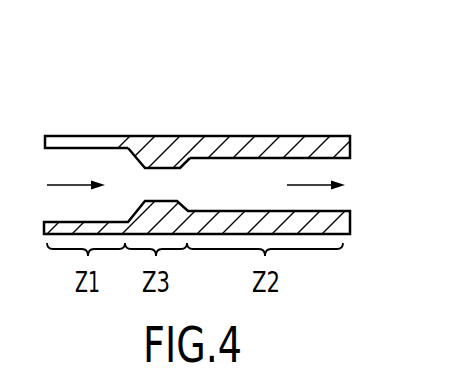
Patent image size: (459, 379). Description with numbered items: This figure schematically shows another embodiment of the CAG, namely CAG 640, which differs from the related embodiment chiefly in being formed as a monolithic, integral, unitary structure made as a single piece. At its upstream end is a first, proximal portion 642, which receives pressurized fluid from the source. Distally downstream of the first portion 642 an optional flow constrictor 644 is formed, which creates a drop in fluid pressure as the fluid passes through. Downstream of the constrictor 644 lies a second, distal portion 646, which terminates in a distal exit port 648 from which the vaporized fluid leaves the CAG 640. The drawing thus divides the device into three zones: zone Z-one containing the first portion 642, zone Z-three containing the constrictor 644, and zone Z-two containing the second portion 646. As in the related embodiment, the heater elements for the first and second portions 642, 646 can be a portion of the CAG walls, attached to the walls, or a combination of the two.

The CAG 640 is at (227, 202).
The first proximal upstream portion 642 is at (81, 140).
The flow constrictor 644 is at (168, 158).
The second distal portion 646 is at (312, 152).
The distal exit port 648 is at (338, 172).